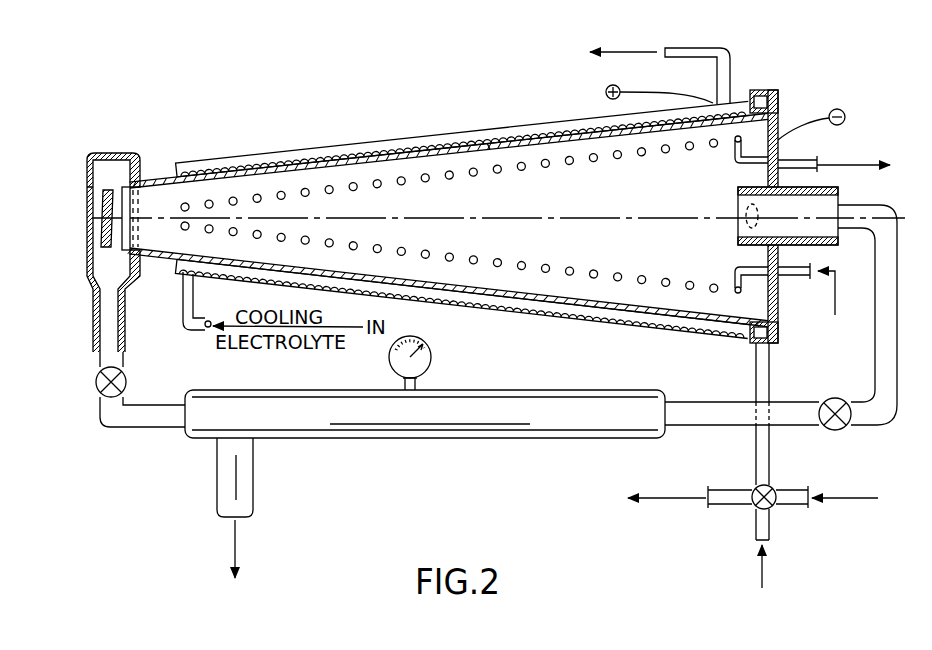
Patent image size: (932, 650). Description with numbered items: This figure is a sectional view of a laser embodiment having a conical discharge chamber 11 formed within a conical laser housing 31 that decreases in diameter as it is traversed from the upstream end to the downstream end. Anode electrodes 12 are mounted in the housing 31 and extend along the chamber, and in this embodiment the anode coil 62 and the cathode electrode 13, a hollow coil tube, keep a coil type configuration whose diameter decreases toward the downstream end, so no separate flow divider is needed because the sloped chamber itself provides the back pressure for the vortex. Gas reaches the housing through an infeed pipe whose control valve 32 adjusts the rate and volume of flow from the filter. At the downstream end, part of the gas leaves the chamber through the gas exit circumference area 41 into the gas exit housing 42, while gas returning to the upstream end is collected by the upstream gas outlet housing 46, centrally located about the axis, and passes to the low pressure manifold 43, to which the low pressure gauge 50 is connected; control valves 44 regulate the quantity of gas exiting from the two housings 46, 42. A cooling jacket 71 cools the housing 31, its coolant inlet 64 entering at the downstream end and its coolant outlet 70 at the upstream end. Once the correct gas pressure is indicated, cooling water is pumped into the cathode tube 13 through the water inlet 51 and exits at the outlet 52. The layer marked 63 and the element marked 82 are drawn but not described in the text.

The discharge chamber 11 is at (481, 217).
The anode electrodes 12 is at (243, 164).
The cathode electrode 13 is at (312, 189).
The laser housing 31 is at (412, 141).
The control valve 32 is at (757, 489).
The gas exit circumference area 41 is at (98, 268).
The gas exit housing 42 is at (110, 153).
The low pressure manifold 43 is at (416, 418).
The control valves 44 is at (96, 390).
The upstream gas outlet housing 46 is at (824, 207).
The low pressure gauge 50 is at (429, 366).
The water inlet 51 is at (785, 289).
The outlet 52 is at (812, 154).
The anode coil 62 is at (213, 165).
The cooling jacket outer wall 63 is at (535, 130).
The coolant inlet 64 is at (190, 292).
The coolant outlet 70 is at (702, 47).
The cooling jacket 71 is at (384, 141).
The electrode mesh 82 is at (488, 154).